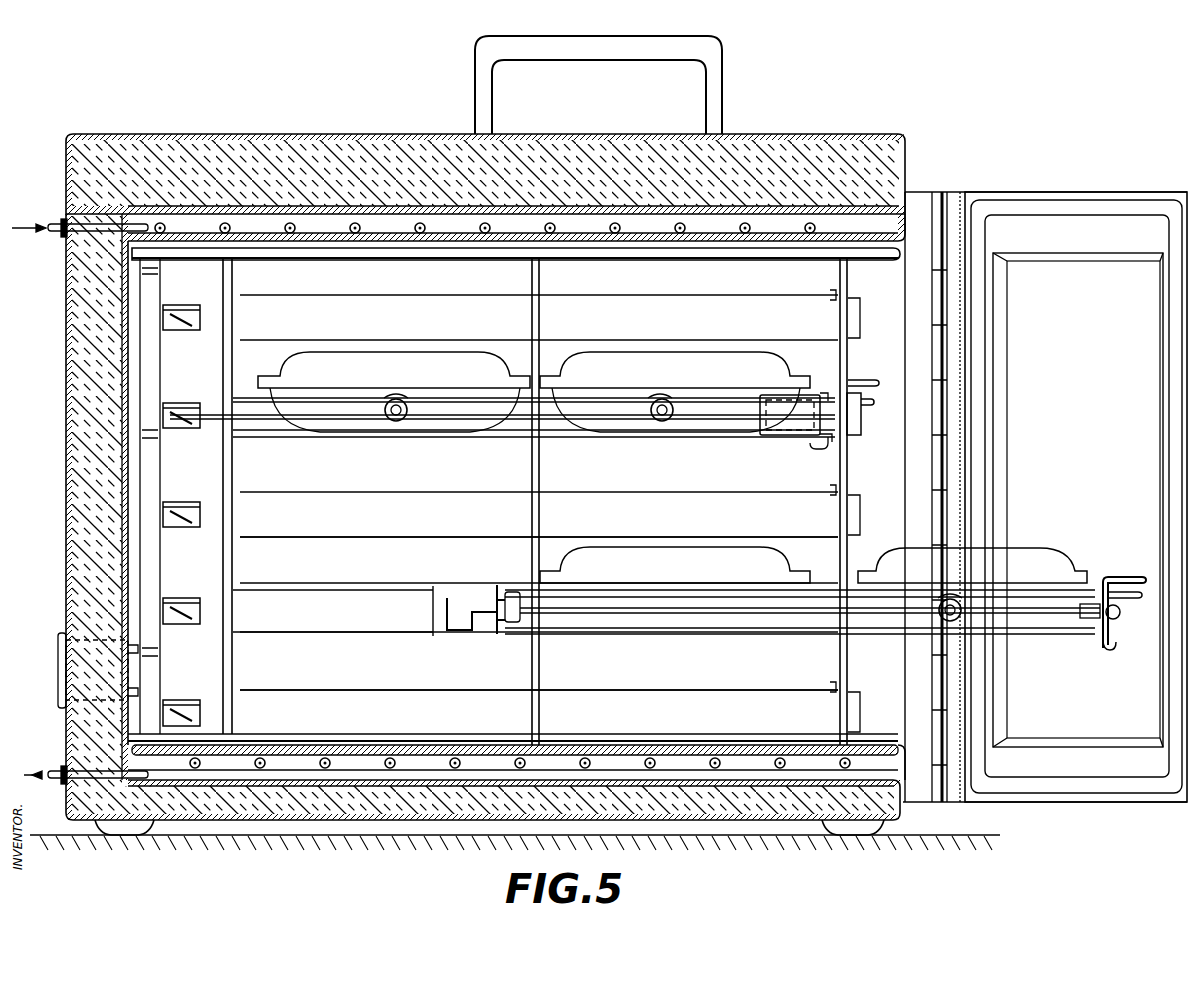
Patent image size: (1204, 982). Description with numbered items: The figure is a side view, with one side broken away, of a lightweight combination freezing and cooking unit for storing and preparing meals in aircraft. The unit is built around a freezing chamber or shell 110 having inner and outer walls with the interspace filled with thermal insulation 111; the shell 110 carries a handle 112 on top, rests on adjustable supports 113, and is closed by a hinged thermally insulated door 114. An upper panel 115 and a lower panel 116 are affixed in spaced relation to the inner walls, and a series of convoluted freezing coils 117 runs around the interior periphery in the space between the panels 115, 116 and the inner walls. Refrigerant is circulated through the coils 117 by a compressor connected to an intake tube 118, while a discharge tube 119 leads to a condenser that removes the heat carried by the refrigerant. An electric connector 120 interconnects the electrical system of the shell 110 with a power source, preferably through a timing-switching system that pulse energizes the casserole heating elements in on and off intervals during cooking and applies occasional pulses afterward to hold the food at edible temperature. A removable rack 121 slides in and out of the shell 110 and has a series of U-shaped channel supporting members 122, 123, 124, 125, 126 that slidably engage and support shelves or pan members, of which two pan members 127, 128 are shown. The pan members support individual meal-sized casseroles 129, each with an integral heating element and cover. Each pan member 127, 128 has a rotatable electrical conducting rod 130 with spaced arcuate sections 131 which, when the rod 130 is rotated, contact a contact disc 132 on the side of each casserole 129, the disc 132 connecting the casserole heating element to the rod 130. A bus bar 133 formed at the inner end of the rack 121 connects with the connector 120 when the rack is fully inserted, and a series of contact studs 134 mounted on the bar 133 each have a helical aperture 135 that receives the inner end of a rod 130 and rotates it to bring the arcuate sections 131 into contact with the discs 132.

The freezing chamber or shell 110 is at (852, 132).
The thermal insulation 111 is at (893, 158).
The handle 112 is at (722, 62).
The adjustable supports 113 is at (128, 826).
The hinged thermally insulated door 114 is at (1124, 190).
The upper panel 115 is at (309, 243).
The lower panel 116 is at (360, 745).
The convoluted freezing coils 117 is at (488, 232).
The intake tube 118 is at (58, 222).
The discharge tube 119 is at (86, 788).
The electric connector 120 is at (64, 630).
The removable rack 121 is at (905, 244).
The U-shaped channel supporting member 122 is at (818, 304).
The U-shaped channel supporting member 123 is at (795, 436).
The U-shaped channel supporting member 124 is at (728, 508).
The U-shaped channel supporting member 125 is at (728, 622).
The U-shaped channel supporting member 126 is at (753, 692).
The pan member 127 is at (876, 378).
The pan member 128 is at (1126, 576).
The casserole 129 is at (580, 420).
The rotatable electrical conducting rod 130 is at (204, 404).
The arcuate section 131 is at (394, 398).
The contact disc 132 is at (398, 428).
The bus bar 133 is at (150, 436).
The contact stud 134 is at (182, 305).
The helical aperture 135 is at (190, 330).